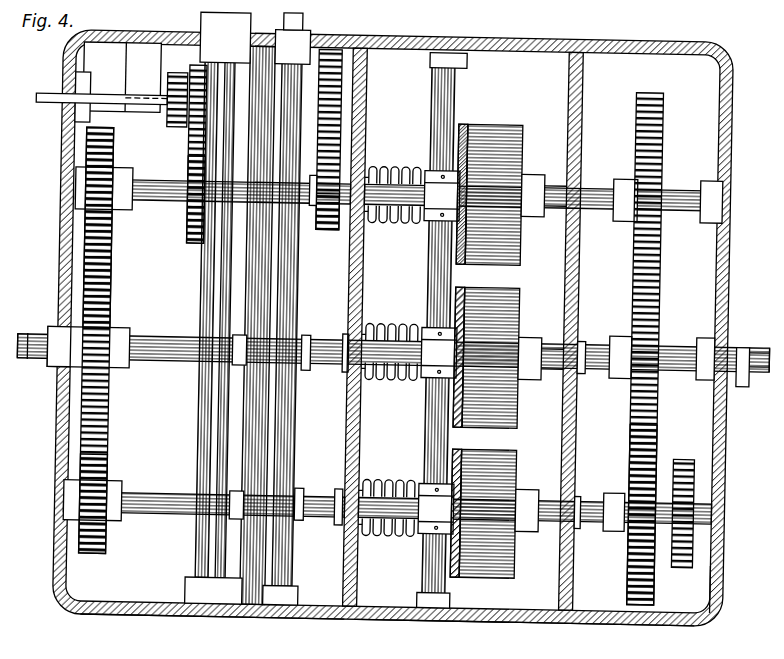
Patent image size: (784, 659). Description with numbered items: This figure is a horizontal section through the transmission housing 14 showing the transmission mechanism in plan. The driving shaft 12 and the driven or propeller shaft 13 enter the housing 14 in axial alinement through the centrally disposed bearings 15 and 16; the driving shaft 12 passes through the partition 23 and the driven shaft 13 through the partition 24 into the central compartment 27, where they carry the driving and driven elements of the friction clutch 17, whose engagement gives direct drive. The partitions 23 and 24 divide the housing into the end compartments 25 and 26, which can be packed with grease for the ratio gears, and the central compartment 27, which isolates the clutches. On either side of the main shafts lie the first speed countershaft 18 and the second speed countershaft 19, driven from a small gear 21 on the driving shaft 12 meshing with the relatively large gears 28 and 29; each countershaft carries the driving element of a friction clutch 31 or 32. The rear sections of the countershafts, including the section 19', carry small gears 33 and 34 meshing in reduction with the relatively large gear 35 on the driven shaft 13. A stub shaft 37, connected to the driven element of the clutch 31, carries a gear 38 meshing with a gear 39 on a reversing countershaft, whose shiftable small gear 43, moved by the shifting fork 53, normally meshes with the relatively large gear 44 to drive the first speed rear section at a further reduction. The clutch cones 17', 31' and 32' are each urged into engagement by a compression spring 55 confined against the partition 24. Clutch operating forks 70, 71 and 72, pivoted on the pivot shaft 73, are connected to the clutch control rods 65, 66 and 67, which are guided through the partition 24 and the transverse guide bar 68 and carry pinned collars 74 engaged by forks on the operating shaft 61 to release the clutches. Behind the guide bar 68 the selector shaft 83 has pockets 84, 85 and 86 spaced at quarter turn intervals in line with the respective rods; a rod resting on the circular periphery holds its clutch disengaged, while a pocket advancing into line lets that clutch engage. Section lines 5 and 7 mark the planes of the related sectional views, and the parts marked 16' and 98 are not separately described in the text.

The section line 5- 5 is at (30, 565).
The section line 7- 7 is at (420, 25).
The driving shaft 12 is at (549, 341).
The driven shaft 13 is at (36, 340).
The transmission housing 14 is at (62, 149).
The bearing 15 is at (742, 340).
The bearing 16 is at (43, 363).
The upper shaft 16' is at (213, 203).
The friction clutch 17 is at (509, 344).
The clutch cone 17' is at (471, 345).
The first speed countershaft 18 is at (616, 216).
The second speed countershaft 19 is at (599, 503).
The rear section of second speed countershaft 19' is at (204, 488).
The small gear 21 is at (630, 400).
The partition 23 is at (572, 586).
The partition 24 is at (355, 612).
The end compartment 25 is at (700, 588).
The end compartment 26 is at (142, 607).
The central compartment 27 is at (526, 607).
The large gear 28 is at (632, 286).
The large gear 29 is at (632, 450).
The friction clutch 31 is at (512, 184).
The clutch cone 31' is at (476, 181).
The friction clutch 32 is at (498, 514).
The clutch cone 32' is at (473, 529).
The small gear 33 is at (110, 240).
The small gear 34 is at (110, 470).
The large gear 35 is at (112, 416).
The stub shaft 37 is at (370, 172).
The gear 38 is at (328, 232).
The gear 39 is at (338, 78).
The small gear 43 is at (185, 132).
The large gear 44 is at (185, 162).
The shifting fork 53 is at (174, 77).
The compression spring 55 is at (398, 172).
The operating shaft 61 is at (296, 292).
The clutch control rod 65 is at (404, 219).
The clutch control rod 66 is at (404, 376).
The clutch control rod 67 is at (392, 532).
The transverse guide bar 68 is at (255, 307).
The clutch operating fork 70 is at (457, 190).
The clutch operating fork 71 is at (457, 352).
The clutch operating fork 72 is at (457, 514).
The pivot shaft 73 is at (434, 92).
The collar 74 is at (308, 372).
The selector shaft 83 is at (220, 287).
The pocket 84 is at (200, 236).
The pocket 85 is at (200, 512).
The pocket 86 is at (210, 362).
The gear 98 is at (686, 462).